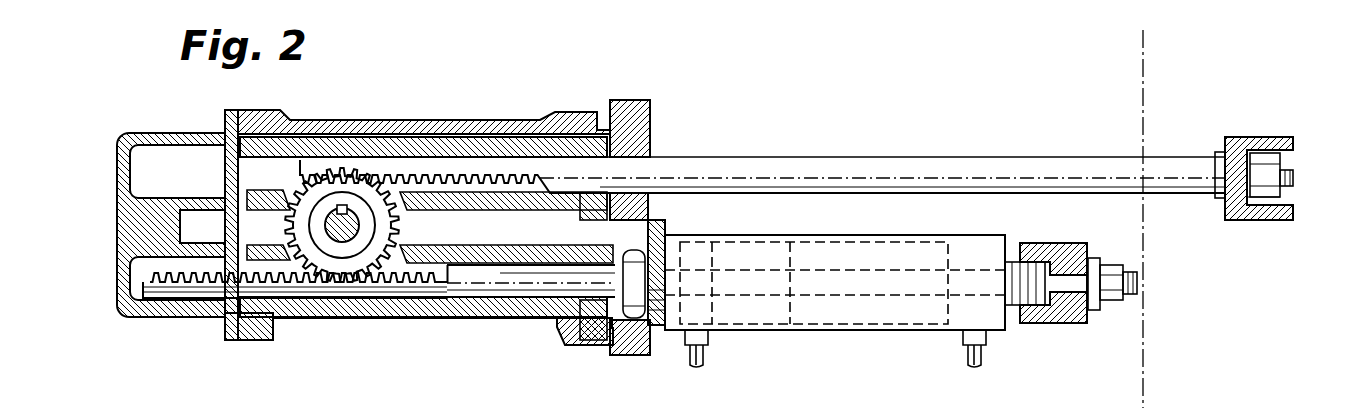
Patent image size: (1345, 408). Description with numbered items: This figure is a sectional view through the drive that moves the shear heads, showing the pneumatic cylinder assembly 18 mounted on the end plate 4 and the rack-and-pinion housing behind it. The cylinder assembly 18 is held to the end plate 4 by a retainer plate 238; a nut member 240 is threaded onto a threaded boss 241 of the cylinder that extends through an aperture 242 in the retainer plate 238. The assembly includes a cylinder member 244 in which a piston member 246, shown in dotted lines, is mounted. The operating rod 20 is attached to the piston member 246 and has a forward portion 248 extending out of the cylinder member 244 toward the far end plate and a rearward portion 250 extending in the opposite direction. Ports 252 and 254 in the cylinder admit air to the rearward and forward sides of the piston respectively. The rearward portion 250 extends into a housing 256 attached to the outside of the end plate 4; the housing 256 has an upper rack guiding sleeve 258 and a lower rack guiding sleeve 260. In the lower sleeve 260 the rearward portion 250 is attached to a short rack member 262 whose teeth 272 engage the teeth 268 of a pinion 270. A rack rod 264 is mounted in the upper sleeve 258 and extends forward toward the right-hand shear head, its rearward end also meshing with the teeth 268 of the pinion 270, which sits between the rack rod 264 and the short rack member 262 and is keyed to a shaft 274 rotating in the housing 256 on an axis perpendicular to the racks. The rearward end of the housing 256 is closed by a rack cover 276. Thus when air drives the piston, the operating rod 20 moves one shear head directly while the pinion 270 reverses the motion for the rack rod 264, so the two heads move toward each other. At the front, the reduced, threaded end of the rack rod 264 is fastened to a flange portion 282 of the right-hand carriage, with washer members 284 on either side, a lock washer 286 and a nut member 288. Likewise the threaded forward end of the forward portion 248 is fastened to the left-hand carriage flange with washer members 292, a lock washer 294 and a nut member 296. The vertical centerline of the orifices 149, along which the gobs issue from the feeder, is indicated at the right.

The end plate 4 is at (630, 110).
The pneumatic cylinder assembly 18 is at (818, 333).
The operating rod 20 is at (832, 264).
The vertical centerline of the orifices 149 is at (1143, 83).
The retainer plate 238 is at (668, 258).
The nut member 240 is at (620, 340).
The threaded boss 241 is at (664, 347).
The aperture 242 is at (668, 323).
The cylinder member 244 is at (997, 320).
The piston member 246 is at (751, 283).
The forward portion 248 is at (1047, 280).
The rearward portion 250 is at (505, 285).
The port 252 is at (683, 347).
The port 254 is at (973, 353).
The housing 256 is at (513, 128).
The upper rack guiding sleeve 258 is at (465, 148).
The lower rack guiding sleeve 260 is at (443, 308).
The short rack member 262 is at (320, 287).
The rack rod 264 is at (395, 176).
The teeth 268 is at (347, 183).
The pinion 270 is at (330, 203).
The teeth 272 is at (207, 277).
The shaft 274 is at (345, 235).
The rack cover 276 is at (177, 140).
The flange portion 282 is at (1260, 140).
The washer members 284 is at (1228, 160).
The lock washer 286 is at (1273, 200).
The nut member 288 is at (1289, 184).
The washer members 292 is at (1107, 273).
The lock washer 294 is at (1110, 267).
The nut member 296 is at (1112, 280).